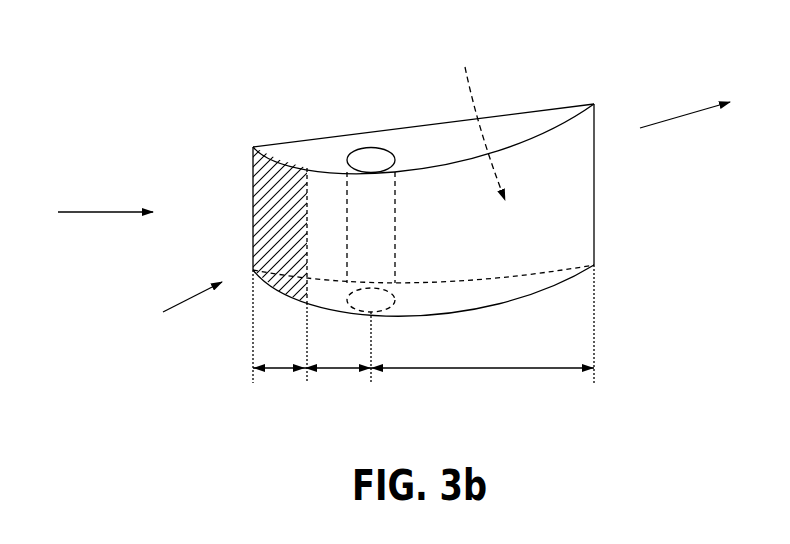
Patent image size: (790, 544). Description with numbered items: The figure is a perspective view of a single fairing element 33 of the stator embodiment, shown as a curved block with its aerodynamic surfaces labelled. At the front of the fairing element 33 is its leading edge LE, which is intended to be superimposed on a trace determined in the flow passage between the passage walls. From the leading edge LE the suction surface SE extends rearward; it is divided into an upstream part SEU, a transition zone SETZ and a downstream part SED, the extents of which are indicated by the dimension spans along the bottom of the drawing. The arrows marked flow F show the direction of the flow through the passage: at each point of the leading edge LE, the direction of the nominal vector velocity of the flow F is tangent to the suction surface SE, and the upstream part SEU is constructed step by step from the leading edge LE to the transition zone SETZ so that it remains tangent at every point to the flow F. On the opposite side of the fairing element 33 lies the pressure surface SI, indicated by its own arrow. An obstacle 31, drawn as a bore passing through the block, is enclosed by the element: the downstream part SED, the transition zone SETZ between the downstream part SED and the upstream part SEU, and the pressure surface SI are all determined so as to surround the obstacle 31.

The obstacle 31 is at (361, 162).
The fairing element 33 is at (178, 310).
The leading edge LE is at (253, 193).
The suction surface SE is at (553, 203).
The upstream part of suction surface SEU is at (270, 412).
The transition zone of suction surface SETZ is at (338, 368).
The downstream part of suction surface SED is at (480, 368).
The pressure surface SI is at (477, 120).
The flow F is at (383, 164).